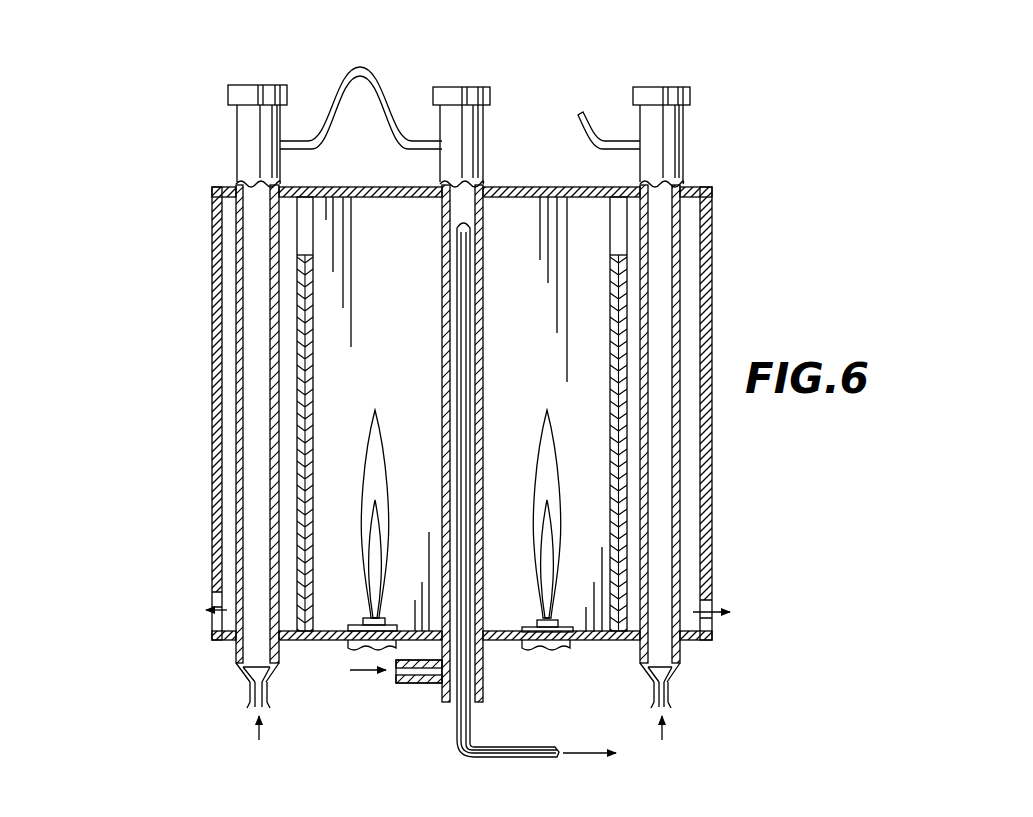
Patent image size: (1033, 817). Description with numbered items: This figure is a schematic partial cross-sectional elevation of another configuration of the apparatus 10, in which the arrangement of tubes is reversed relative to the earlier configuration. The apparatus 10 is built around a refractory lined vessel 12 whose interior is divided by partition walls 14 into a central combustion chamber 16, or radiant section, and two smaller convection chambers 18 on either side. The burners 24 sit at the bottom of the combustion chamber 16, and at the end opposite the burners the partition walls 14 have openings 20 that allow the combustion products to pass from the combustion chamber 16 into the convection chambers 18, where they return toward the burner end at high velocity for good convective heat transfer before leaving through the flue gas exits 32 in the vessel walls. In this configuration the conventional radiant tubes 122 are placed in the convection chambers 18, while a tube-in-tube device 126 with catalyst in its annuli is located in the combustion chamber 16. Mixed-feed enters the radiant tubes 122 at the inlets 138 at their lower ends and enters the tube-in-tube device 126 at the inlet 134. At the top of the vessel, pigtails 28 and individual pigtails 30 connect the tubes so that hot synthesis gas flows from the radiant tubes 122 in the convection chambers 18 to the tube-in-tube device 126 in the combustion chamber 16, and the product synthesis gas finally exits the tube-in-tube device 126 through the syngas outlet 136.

The apparatus 10 is at (130, 103).
The refractory lined vessel 12 is at (712, 208).
The partition walls 14 is at (300, 455).
The combustion chamber 16 is at (583, 465).
The convection chambers 18 is at (230, 383).
The openings 20 is at (310, 217).
The burner 24 is at (350, 648).
The pigtails 28 is at (600, 113).
The individual pigtails 30 is at (365, 68).
The flue gas exits 32 is at (210, 612).
The radiant tubes 122 is at (238, 243).
The tube-in-tube device 126 is at (488, 622).
The inlet 134 is at (410, 684).
The syngas outlet 136 is at (527, 733).
The inlets 138 is at (248, 695).